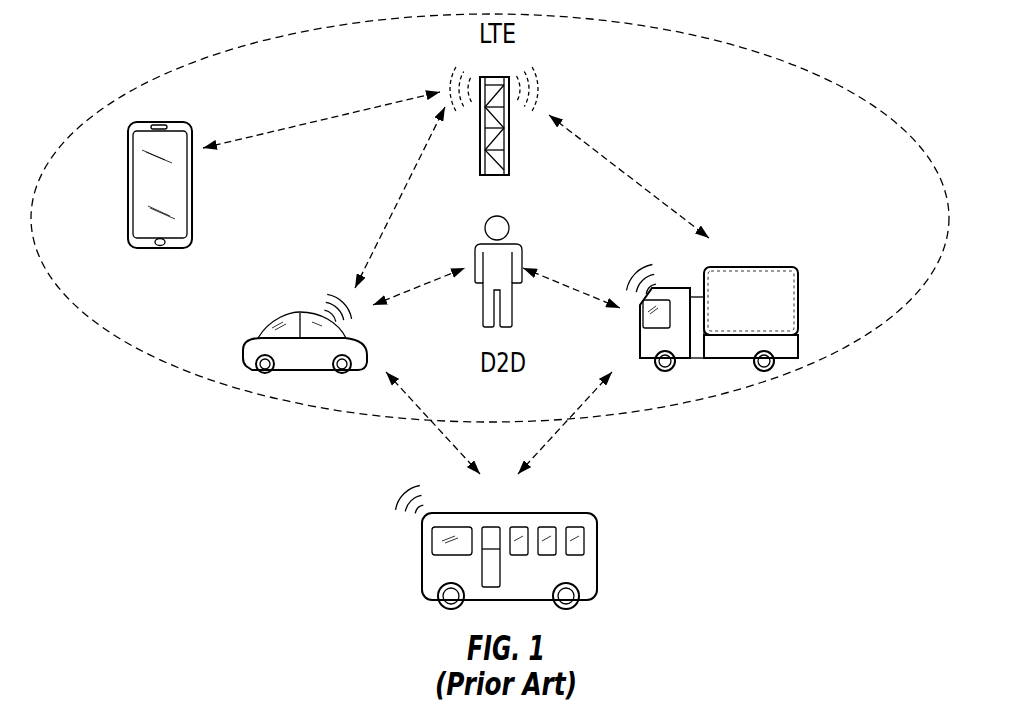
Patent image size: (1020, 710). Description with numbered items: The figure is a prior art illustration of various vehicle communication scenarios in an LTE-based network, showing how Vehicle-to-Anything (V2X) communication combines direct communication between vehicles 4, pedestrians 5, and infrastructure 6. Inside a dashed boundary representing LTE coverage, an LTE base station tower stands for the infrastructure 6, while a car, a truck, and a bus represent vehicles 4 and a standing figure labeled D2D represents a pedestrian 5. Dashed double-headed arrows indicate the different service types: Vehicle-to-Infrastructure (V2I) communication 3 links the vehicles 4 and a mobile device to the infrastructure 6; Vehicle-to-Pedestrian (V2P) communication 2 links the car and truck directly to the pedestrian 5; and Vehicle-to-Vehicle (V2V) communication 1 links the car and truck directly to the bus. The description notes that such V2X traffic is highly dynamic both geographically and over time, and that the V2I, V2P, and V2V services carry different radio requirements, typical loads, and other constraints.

The Vehicle-to-Vehicle (V2V) communication 1 is at (440, 432).
The Vehicle-to-Pedestrian (V2P) communication 2 is at (418, 279).
The Vehicle-to-Infrastructure (V2I) communication 3 is at (395, 207).
The vehicle 4 is at (258, 338).
The pedestrian 5 is at (510, 245).
The infrastructure 6 is at (497, 77).